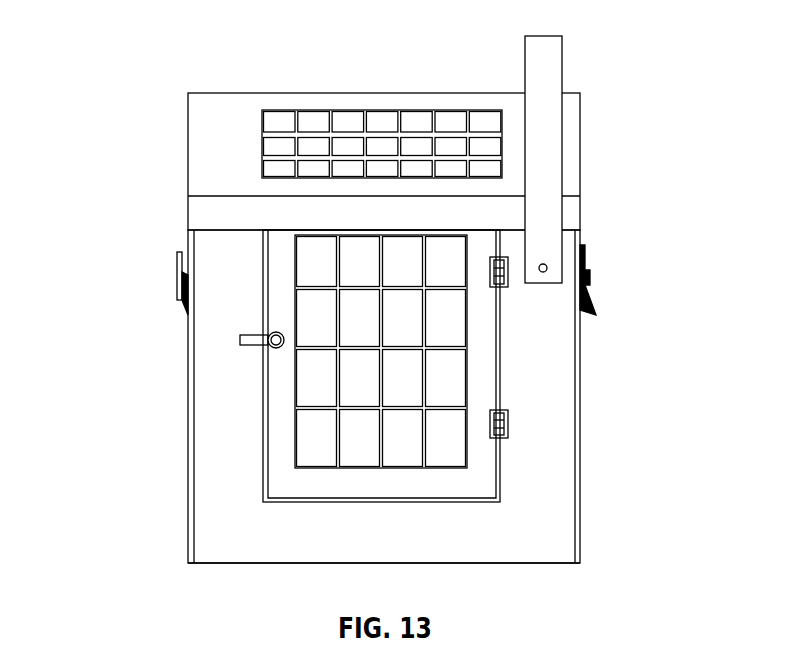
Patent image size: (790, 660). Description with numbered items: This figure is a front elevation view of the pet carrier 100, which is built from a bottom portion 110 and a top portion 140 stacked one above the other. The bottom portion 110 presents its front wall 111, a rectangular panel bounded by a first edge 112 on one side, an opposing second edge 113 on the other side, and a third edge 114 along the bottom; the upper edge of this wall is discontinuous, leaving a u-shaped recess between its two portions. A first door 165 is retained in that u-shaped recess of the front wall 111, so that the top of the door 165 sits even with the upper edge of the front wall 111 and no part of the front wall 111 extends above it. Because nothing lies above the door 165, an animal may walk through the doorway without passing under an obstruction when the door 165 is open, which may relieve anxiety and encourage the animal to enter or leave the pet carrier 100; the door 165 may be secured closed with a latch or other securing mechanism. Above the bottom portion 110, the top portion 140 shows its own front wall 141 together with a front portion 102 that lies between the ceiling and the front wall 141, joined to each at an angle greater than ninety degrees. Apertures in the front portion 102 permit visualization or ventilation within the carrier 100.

The pet carrier 100 is at (138, 62).
The front portion 102 is at (600, 150).
The bottom portion 110 is at (168, 458).
The front wall 111 is at (605, 383).
The first edge 112 is at (188, 345).
The second edge 113 is at (580, 465).
The third edge 114 is at (240, 563).
The top portion 140 is at (260, 82).
The front wall 141 is at (595, 235).
The door 165 is at (262, 372).